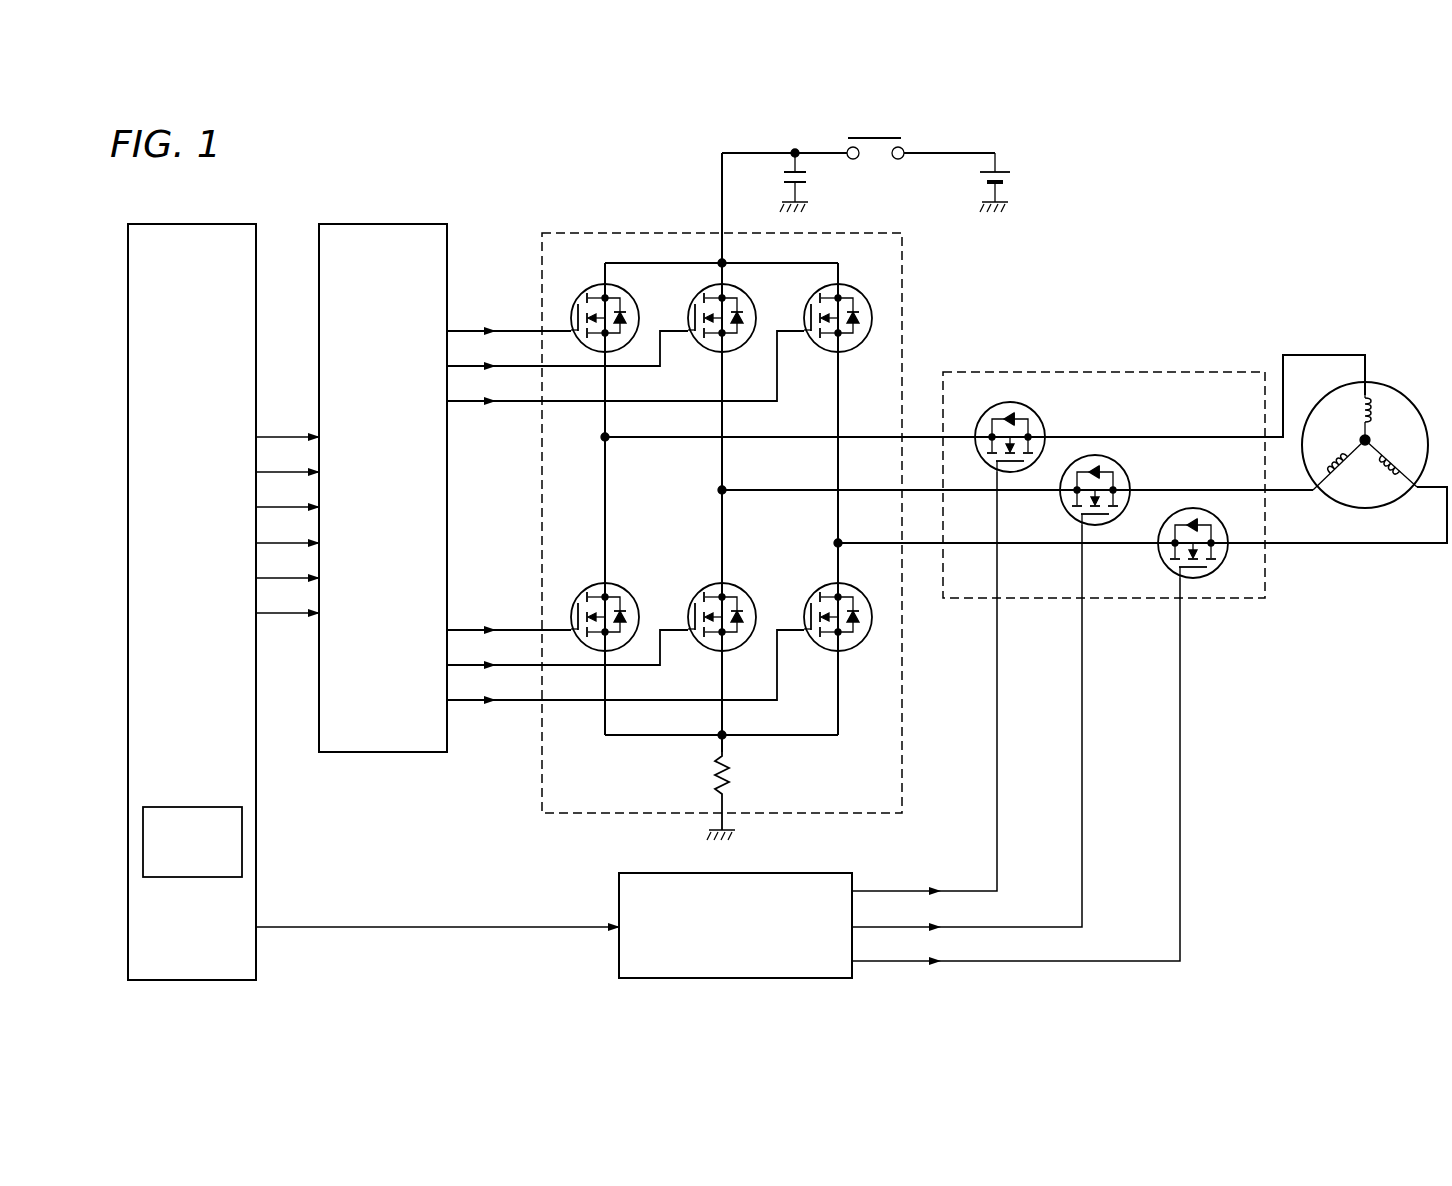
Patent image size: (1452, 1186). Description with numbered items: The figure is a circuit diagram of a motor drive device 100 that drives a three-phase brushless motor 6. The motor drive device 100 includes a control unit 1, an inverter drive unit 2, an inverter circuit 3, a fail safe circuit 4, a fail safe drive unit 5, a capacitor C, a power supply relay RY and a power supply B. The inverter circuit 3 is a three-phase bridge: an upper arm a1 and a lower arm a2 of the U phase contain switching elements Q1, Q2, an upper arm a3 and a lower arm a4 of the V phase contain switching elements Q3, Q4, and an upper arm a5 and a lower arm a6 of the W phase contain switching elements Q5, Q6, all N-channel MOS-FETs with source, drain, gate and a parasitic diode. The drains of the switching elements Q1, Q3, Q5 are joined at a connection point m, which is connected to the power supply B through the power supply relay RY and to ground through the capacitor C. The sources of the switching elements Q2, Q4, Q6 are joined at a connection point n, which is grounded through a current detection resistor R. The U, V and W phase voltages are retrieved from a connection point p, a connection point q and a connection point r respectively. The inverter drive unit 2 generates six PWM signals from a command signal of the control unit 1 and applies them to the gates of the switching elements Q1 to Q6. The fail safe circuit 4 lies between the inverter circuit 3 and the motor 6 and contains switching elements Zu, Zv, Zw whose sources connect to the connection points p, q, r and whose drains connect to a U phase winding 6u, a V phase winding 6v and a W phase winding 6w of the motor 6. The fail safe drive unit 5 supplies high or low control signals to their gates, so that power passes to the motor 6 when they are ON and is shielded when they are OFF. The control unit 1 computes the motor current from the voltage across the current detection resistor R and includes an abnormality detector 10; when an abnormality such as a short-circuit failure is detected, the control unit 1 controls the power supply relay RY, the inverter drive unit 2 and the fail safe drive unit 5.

The control unit 1 is at (184, 224).
The inverter drive unit 2 is at (377, 224).
The inverter circuit 3 is at (837, 232).
The fail safe circuit 4 is at (1184, 371).
The fail safe drive unit 5 is at (794, 873).
The motor 6 is at (1372, 454).
The U phase winding 6u is at (1371, 411).
The V phase winding 6v is at (1336, 458).
The W phase winding 6w is at (1394, 466).
The abnormality detector 10 is at (242, 836).
The motor drive device 100 is at (1103, 261).
The switching element Q1 is at (576, 300).
The switching element Q2 is at (576, 600).
The switching element Q3 is at (687, 309).
The switching element Q4 is at (691, 603).
The switching element Q5 is at (804, 309).
The switching element Q6 is at (807, 603).
The switching element Zu is at (1035, 421).
The switching element Zv is at (1120, 474).
The switching element Zw is at (1216, 527).
The capacitor C is at (779, 183).
The power supply relay RY is at (878, 152).
The power supply B is at (1014, 181).
The current detection resistor R is at (735, 776).
The upper arm a1 is at (603, 388).
The lower arm a2 is at (603, 685).
The upper arm a3 is at (721, 388).
The lower arm a4 is at (721, 685).
The upper arm a5 is at (837, 388).
The lower arm a6 is at (837, 685).
The connection point m is at (737, 253).
The connection point n is at (737, 723).
The connection point p is at (589, 437).
The connection point q is at (706, 490).
The connection point r is at (823, 543).